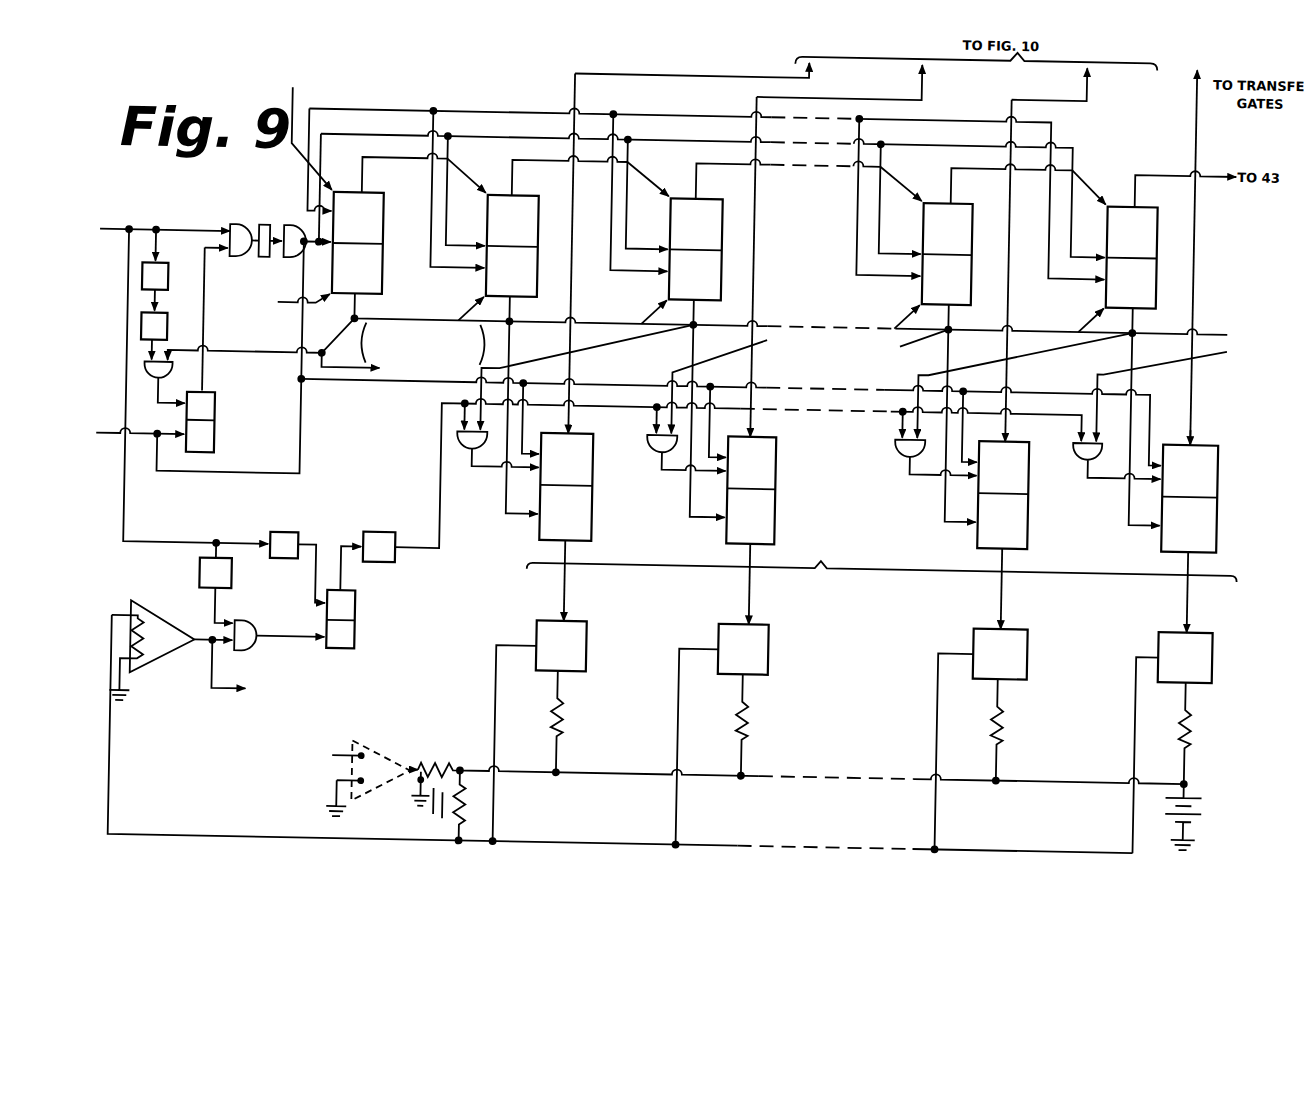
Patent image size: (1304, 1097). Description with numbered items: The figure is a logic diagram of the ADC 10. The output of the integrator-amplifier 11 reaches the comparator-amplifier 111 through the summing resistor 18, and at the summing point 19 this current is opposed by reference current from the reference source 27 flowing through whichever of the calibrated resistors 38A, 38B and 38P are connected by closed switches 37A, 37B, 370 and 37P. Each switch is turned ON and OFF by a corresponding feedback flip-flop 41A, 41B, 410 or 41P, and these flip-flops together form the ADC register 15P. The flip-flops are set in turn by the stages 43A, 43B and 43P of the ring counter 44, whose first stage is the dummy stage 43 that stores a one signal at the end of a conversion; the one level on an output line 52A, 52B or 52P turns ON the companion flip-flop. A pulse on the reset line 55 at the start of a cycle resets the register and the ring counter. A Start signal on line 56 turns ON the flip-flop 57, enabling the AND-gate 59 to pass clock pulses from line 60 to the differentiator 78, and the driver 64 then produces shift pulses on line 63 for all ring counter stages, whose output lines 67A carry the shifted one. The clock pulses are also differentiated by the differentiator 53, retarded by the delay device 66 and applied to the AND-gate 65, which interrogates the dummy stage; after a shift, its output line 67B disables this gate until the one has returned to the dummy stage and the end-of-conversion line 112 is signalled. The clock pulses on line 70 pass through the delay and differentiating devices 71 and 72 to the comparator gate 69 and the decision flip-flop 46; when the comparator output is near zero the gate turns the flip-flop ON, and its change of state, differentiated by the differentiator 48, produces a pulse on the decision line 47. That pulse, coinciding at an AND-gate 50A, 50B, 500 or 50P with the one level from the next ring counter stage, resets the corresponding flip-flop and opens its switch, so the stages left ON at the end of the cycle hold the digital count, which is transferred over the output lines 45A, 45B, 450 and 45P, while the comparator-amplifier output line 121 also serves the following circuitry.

The ADC 10 is at (526, 183).
The integrator-amplifier 11 is at (388, 766).
The ADC register 15P is at (881, 584).
The summing resistor 18 is at (472, 807).
The summing point 19 is at (462, 847).
The reference source 27 is at (1207, 805).
The switch 37A is at (586, 649).
The switch 37B is at (770, 658).
The switch 370 is at (1024, 648).
The switch 37P is at (1204, 649).
The calibrated resistor 38A is at (568, 720).
The calibrated resistor 38B is at (753, 718).
The calibrated resistor 38P is at (1198, 720).
The feedback flip-flop 41A is at (566, 487).
The feedback flip-flop 41B is at (751, 490).
The feedback flip-flop 410 is at (1003, 495).
The feedback flip-flop 41P is at (1189, 499).
The dummy stage 43 is at (358, 243).
The ring counter stage 43A is at (512, 246).
The ring counter stage 43B is at (696, 249).
The ring counter stage 43P is at (1132, 258).
The ring counter 44 is at (1265, 230).
The ADC output line 45A is at (805, 76).
The ADC output line 45B is at (919, 89).
The ADC output line 450 is at (1083, 89).
The ADC output line 45P is at (1188, 90).
The decision flip-flop 46 is at (356, 619).
The decision line 47 is at (444, 524).
The differentiator 48 is at (380, 535).
The AND-gate 50A is at (460, 446).
The AND-gate 50B is at (650, 447).
The AND-gate 500 is at (905, 444).
The AND-gate 50P is at (1075, 448).
The output line 52A is at (508, 322).
The output line 52B is at (693, 323).
The output line 52P is at (1156, 416).
The differentiator 53 is at (160, 288).
The reset line 55 is at (354, 389).
The Start signal line 56 is at (110, 441).
The flip-flop 57 is at (208, 411).
The AND-gate 59 is at (239, 226).
The clock pulse line 60 is at (119, 238).
The shift pulse line 63 is at (346, 137).
The driver 64 is at (281, 232).
The AND-gate 65 is at (166, 376).
The delay device 66 is at (161, 329).
The output line 67A is at (368, 168).
The output line 67B is at (411, 315).
The comparator gate 69 is at (250, 628).
The line 70 is at (127, 519).
The delay device 71 is at (202, 584).
The differentiating device 72 is at (286, 541).
The differentiator 78 is at (259, 266).
The comparator-amplifier 111 is at (168, 672).
The end of conversion line 112 is at (310, 364).
The comparator-amplifier output line 121 is at (210, 732).